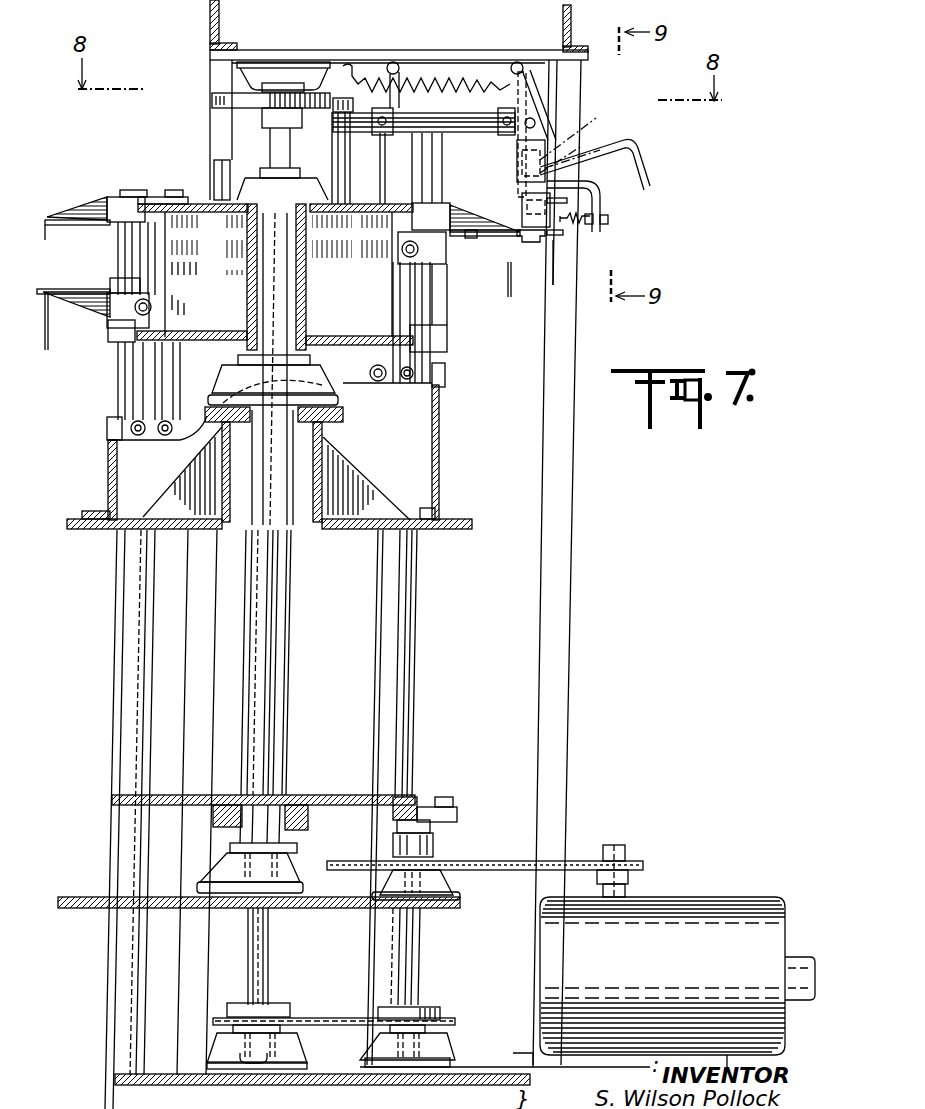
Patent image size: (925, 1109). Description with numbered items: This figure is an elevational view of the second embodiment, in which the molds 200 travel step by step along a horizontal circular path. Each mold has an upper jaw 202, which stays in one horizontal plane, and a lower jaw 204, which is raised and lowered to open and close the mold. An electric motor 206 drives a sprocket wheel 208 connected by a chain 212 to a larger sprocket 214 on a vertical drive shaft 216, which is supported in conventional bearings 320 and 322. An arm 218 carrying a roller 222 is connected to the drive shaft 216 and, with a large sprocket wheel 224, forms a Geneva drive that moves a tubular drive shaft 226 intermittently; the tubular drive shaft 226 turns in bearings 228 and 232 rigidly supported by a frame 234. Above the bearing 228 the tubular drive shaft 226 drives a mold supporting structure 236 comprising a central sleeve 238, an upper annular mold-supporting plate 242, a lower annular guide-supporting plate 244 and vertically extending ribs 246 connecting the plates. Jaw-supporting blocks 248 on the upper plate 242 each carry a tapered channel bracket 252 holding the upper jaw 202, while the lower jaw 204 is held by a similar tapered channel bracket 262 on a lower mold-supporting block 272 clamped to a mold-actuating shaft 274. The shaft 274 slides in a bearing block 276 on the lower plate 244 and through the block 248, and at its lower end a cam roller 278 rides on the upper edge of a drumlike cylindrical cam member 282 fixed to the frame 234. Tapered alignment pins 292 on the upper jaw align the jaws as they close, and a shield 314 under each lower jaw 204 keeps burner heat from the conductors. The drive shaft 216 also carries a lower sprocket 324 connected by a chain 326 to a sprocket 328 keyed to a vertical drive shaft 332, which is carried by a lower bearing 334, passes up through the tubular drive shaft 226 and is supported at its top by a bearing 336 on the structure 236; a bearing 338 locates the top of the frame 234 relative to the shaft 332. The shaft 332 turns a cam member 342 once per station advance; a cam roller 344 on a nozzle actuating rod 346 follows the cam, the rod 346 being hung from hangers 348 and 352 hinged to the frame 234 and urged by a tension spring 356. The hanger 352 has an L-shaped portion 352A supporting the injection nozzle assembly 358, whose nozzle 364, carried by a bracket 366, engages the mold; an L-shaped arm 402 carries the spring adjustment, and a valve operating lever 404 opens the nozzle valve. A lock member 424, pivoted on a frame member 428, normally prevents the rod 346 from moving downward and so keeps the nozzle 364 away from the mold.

The molds 200 is at (478, 205).
The upper mold jaw 202 is at (72, 226).
The lower mold jaw 204 is at (70, 292).
The electric motor 206 is at (710, 913).
The sprocket wheel 208 is at (630, 860).
The chain 212 is at (482, 862).
The larger sprocket 214 is at (365, 860).
The vertical drive shaft 216 is at (412, 950).
The arm 218 is at (455, 813).
The roller 222 is at (448, 797).
The large sprocket wheel 224 is at (325, 795).
The tubular drive shaft 226 is at (298, 600).
The bearing 228 is at (318, 386).
The bearing 232 is at (300, 897).
The frame 234 is at (548, 553).
The mold supporting structure 236 is at (182, 168).
The central sleeve 238 is at (318, 262).
The upper annular mold-supporting plate 242 is at (211, 277).
The lower annular guide-supporting plate 244 is at (200, 340).
The vertically extending ribs 246 is at (224, 292).
The jaw-supporting block 248 is at (113, 204).
The tapered channel bracket 252 is at (82, 210).
The tapered channel bracket 262 is at (86, 312).
The lower mold-supporting block 272 is at (115, 290).
The mold-actuating shaft 274 is at (385, 176).
The bearing block 276 is at (110, 332).
The cam roller 278 is at (107, 426).
The cylindrical cam member 282 is at (108, 462).
The tapered alignment pins 292 is at (52, 228).
The shield 314 is at (508, 300).
The bearing 320 is at (433, 890).
The bearing 322 is at (435, 1056).
The lower sprocket 324 is at (440, 1016).
The chain 326 is at (318, 1018).
The sprocket 328 is at (222, 1010).
The vertical drive shaft 332 is at (272, 137).
The lower bearing 334 is at (300, 1045).
The bearing 336 is at (302, 186).
The bearing 338 is at (262, 78).
The cam member 342 is at (214, 100).
The cam roller 344 is at (342, 100).
The nozzle actuating rod 346 is at (468, 117).
The hanger 348 is at (396, 62).
The hanger 352 is at (518, 62).
The L-shaped portion 352A is at (576, 126).
The tension spring 356 is at (432, 84).
The injection nozzle assembly 358 is at (622, 266).
The nozzle 364 is at (525, 245).
The bracket 366 is at (544, 210).
The L-shaped arm 402 is at (632, 145).
The valve operating lever 404 is at (590, 203).
The lock member 424 is at (520, 195).
The frame member 428 is at (543, 80).